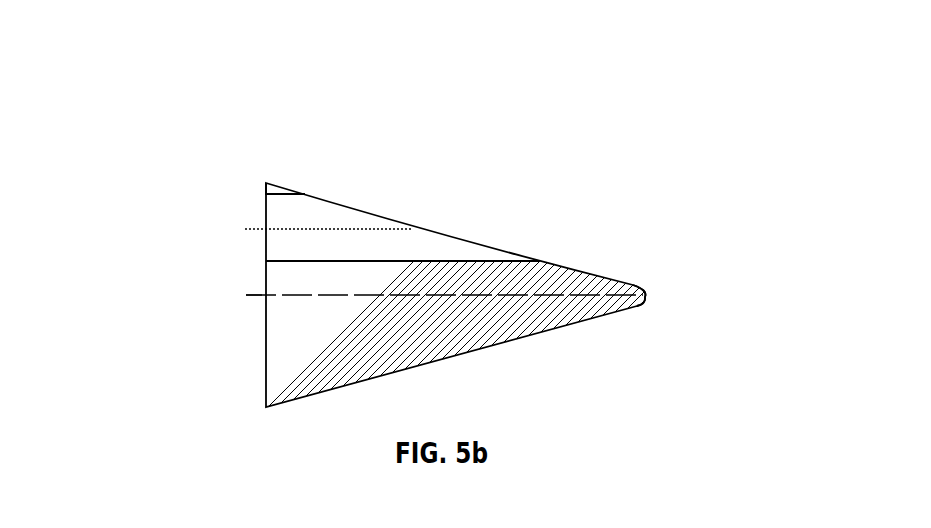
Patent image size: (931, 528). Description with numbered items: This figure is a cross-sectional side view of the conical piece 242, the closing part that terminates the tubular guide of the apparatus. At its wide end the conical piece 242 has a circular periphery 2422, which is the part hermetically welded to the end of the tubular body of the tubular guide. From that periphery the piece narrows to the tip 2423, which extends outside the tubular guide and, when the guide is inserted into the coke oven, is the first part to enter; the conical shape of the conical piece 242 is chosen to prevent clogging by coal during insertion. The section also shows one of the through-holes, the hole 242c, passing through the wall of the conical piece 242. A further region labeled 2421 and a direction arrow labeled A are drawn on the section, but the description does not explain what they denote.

The conical piece 242 is at (562, 202).
The blade body portion 2421 is at (237, 223).
The circular periphery 2422 is at (266, 169).
The hole 242c is at (265, 208).
The tip 2423 is at (655, 282).
The direction A is at (236, 305).